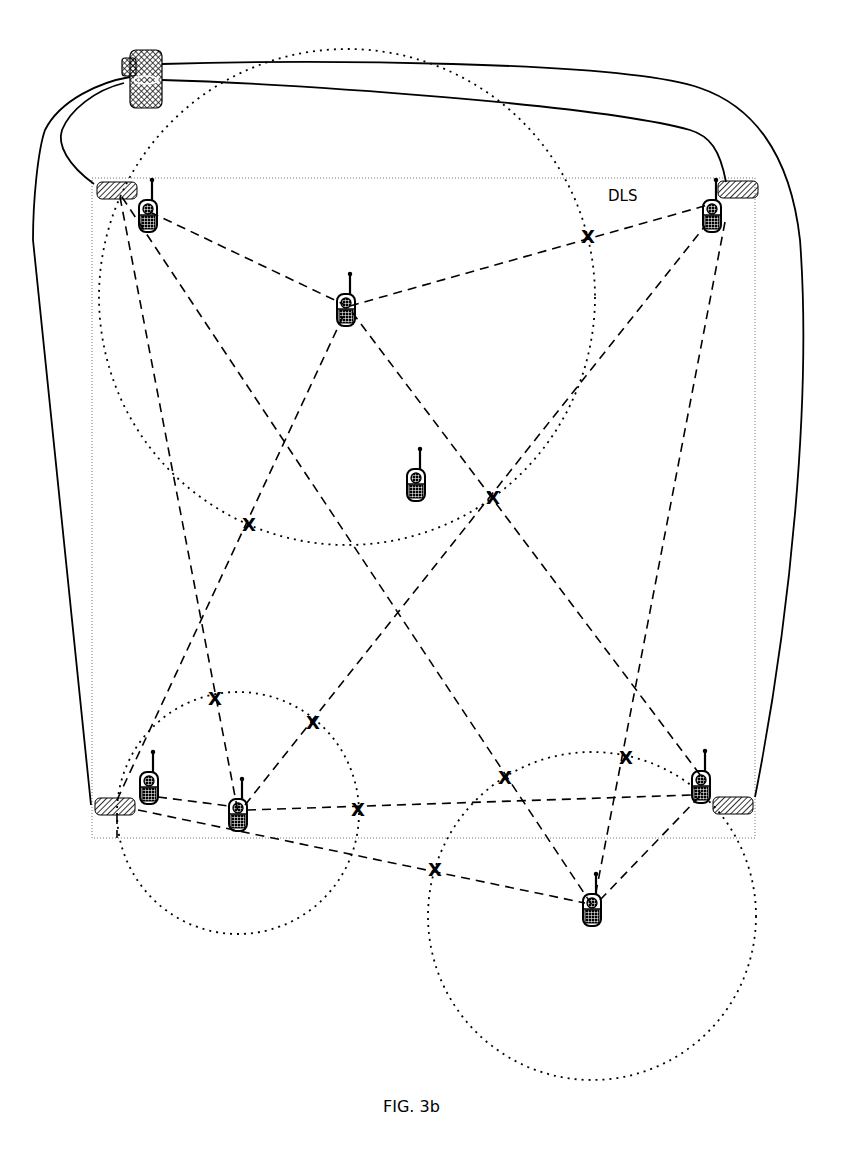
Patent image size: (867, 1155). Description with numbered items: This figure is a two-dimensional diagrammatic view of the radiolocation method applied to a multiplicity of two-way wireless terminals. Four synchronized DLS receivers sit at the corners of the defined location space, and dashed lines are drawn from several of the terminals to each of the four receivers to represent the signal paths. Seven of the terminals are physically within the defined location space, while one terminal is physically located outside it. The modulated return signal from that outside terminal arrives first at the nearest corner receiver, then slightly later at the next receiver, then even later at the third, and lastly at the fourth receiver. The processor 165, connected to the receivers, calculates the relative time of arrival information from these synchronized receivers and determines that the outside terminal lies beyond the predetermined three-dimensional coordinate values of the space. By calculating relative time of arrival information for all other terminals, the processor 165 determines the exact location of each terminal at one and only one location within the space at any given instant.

The processor 165 is at (146, 50).